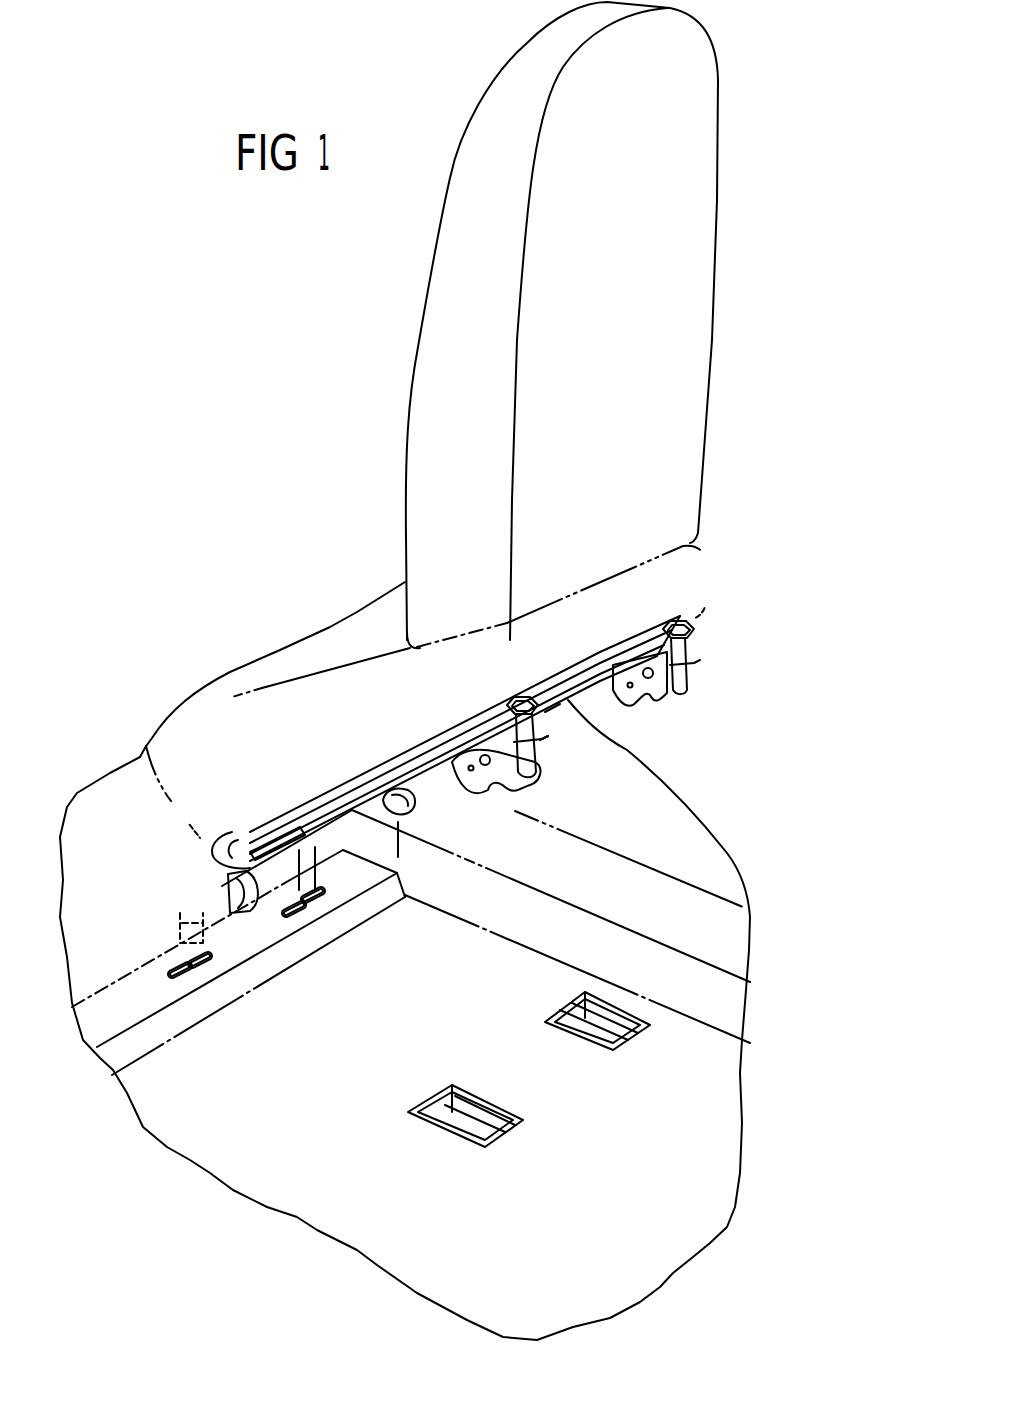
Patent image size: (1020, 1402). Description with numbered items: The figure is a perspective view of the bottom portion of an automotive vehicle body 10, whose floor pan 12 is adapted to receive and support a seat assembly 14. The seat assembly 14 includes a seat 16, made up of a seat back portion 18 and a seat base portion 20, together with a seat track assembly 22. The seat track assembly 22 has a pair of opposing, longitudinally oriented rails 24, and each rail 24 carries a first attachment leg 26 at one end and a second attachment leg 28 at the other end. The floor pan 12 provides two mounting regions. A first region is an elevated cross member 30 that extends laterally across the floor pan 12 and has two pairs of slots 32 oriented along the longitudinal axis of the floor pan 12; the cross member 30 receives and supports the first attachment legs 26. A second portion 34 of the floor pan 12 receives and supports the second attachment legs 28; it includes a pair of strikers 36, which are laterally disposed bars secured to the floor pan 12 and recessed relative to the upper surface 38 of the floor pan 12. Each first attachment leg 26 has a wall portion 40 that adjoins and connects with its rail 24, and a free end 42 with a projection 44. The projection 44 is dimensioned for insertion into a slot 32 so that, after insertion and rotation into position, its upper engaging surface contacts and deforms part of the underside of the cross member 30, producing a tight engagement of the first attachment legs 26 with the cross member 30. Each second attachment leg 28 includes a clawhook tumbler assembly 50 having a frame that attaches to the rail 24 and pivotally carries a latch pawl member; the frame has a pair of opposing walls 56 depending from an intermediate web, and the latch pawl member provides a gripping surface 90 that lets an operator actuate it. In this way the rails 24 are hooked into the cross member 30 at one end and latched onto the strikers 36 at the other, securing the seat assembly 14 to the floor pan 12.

The automotive vehicle body 10 is at (272, 1238).
The floor pan 12 is at (394, 1047).
The seat assembly 14 is at (256, 526).
The seat 16 is at (236, 682).
The seat back portion 18 is at (430, 352).
The seat base portion 20 is at (310, 808).
The seat track assembly 22 is at (198, 862).
The rail 24 is at (542, 712).
The first attachment leg 26 is at (215, 904).
The second attachment leg 28 is at (500, 762).
The elevated cross member 30 is at (78, 1030).
The slots 32 is at (216, 972).
The second portion of the floor pan 34 is at (560, 1082).
The strikers 36 is at (575, 1025).
The upper surface of the floor pan 38 is at (500, 1128).
The wall portion 40 is at (216, 843).
The free end 42 is at (200, 893).
The projection 44 is at (232, 916).
The clawhook tumbler assembly 50 is at (725, 674).
The opposing walls 56 is at (508, 772).
The gripping surface 90 is at (540, 736).